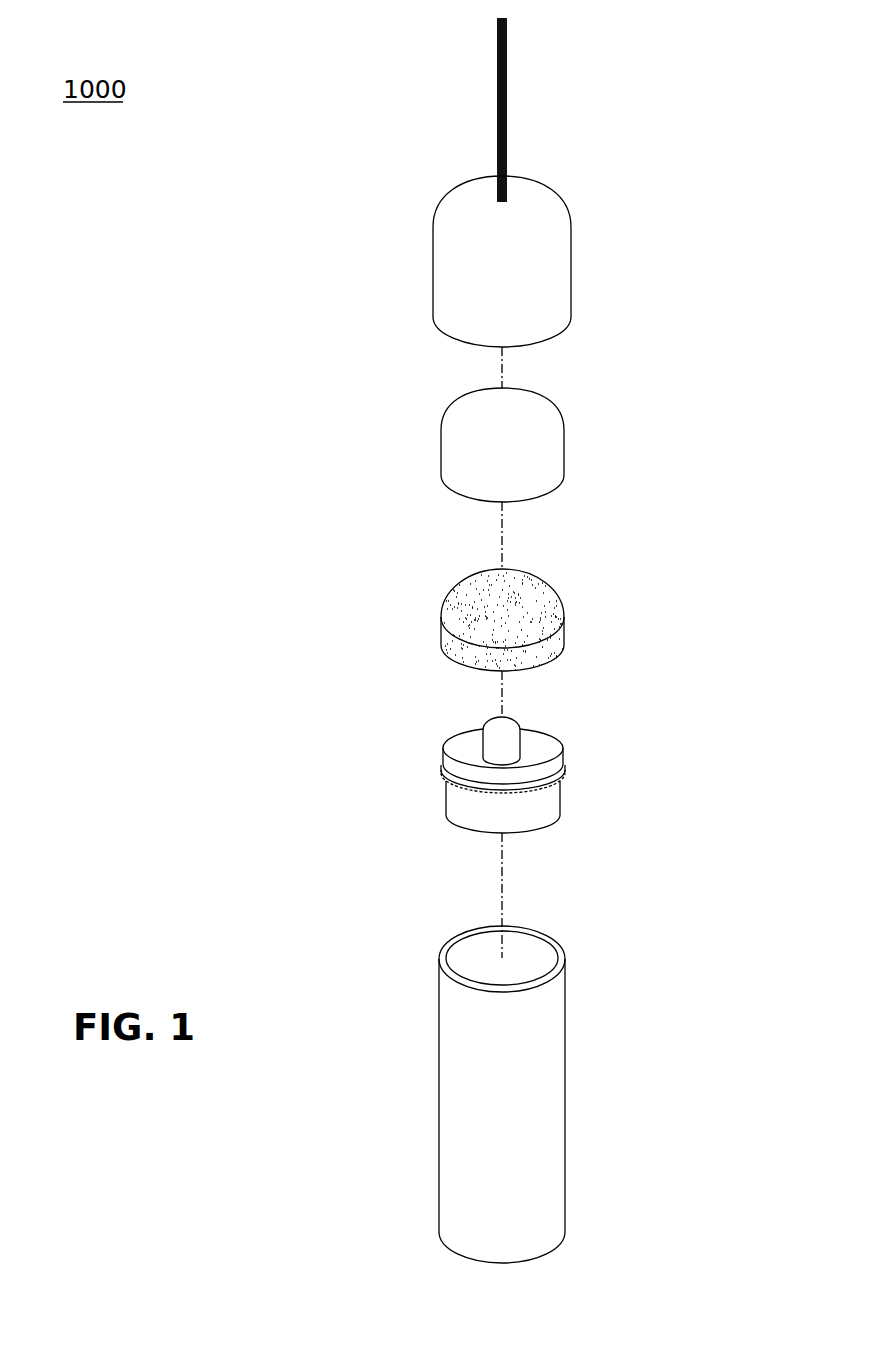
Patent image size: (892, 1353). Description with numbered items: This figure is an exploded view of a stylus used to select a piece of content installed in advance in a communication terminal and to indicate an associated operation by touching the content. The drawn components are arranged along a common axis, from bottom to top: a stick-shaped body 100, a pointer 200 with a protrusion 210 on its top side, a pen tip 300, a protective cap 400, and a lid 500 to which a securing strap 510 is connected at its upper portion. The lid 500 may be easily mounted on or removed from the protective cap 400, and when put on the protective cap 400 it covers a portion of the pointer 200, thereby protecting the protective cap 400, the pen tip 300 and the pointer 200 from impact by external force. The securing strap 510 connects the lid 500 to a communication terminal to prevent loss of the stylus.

The securing strap 510 is at (507, 117).
The lid 500 is at (568, 258).
The protective cap 400 is at (567, 437).
The pen tip 300 is at (567, 625).
The protrusion 210 is at (507, 741).
The pointer 200 is at (567, 777).
The stick-shaped body 100 is at (567, 1090).